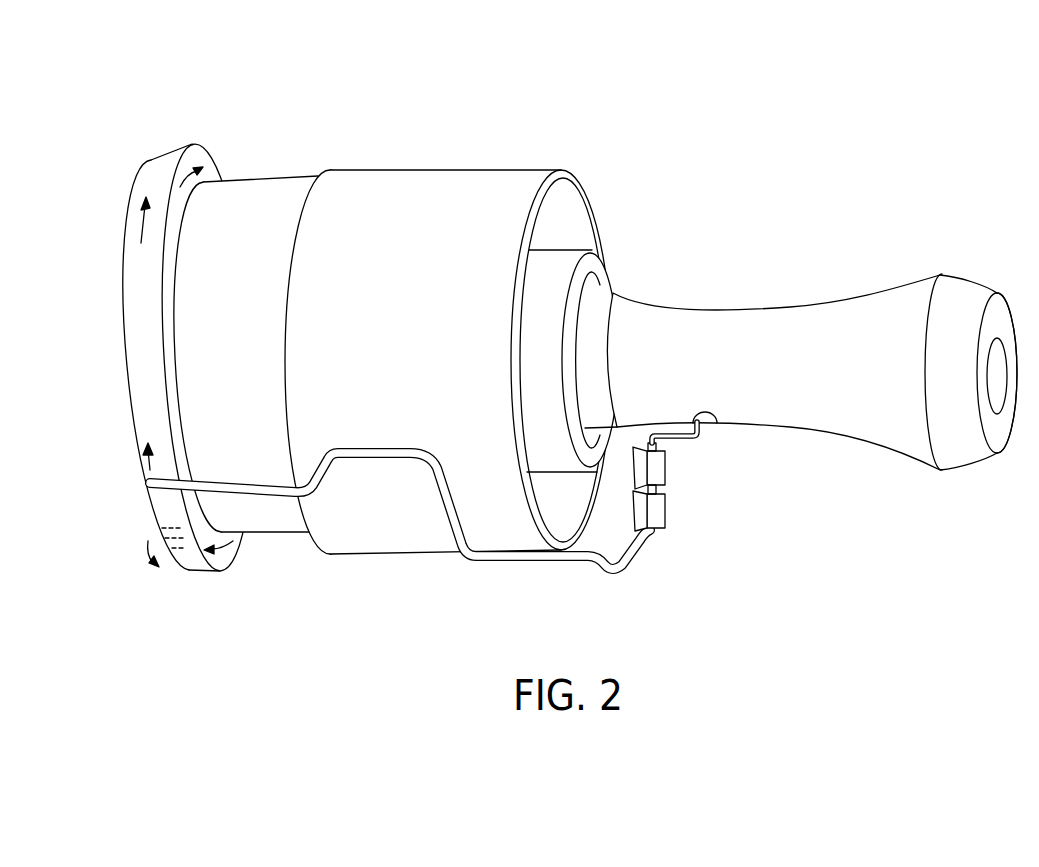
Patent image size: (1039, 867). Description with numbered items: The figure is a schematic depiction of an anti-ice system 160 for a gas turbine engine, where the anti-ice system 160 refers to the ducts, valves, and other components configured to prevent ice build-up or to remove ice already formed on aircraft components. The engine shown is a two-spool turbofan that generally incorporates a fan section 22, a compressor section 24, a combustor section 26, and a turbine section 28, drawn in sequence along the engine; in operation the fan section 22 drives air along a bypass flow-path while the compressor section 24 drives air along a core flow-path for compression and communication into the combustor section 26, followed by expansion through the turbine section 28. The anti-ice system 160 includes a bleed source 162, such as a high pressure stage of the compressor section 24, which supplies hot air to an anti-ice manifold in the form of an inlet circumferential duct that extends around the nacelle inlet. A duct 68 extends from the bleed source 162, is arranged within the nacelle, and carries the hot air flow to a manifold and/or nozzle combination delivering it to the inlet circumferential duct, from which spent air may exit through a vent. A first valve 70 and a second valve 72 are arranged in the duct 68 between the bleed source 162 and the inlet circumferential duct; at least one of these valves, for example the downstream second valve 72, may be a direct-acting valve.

The fan section 22 is at (253, 77).
The compressor section 24 is at (597, 165).
The combustor section 26 is at (813, 165).
The turbine section 28 is at (832, 165).
The duct 68 is at (457, 525).
The first valve 70 is at (657, 473).
The second valve 72 is at (660, 520).
The anti-ice system 160 is at (570, 321).
The bleed source 162 is at (718, 424).